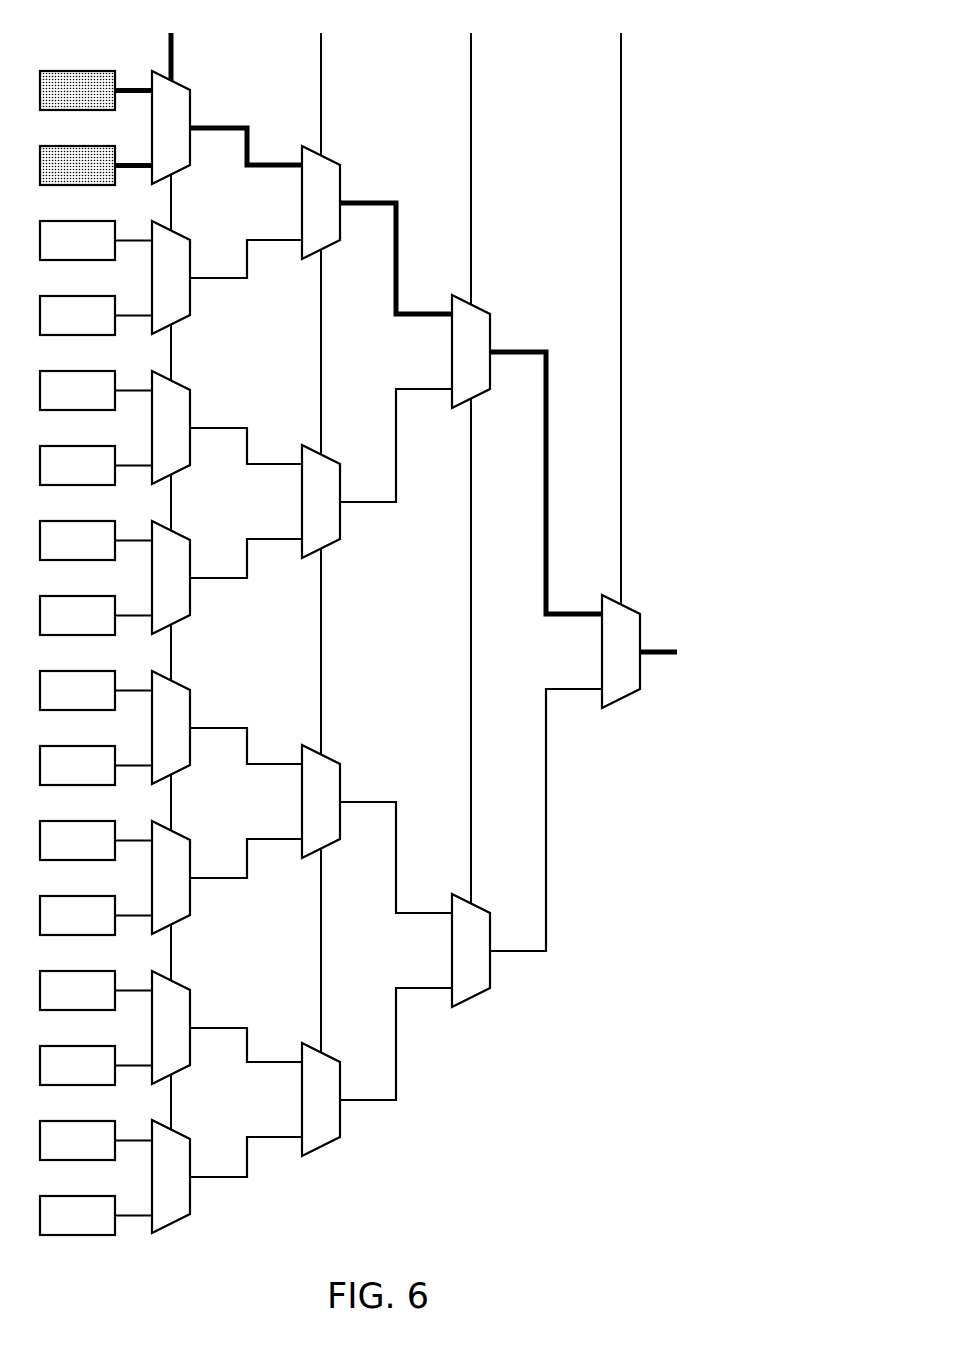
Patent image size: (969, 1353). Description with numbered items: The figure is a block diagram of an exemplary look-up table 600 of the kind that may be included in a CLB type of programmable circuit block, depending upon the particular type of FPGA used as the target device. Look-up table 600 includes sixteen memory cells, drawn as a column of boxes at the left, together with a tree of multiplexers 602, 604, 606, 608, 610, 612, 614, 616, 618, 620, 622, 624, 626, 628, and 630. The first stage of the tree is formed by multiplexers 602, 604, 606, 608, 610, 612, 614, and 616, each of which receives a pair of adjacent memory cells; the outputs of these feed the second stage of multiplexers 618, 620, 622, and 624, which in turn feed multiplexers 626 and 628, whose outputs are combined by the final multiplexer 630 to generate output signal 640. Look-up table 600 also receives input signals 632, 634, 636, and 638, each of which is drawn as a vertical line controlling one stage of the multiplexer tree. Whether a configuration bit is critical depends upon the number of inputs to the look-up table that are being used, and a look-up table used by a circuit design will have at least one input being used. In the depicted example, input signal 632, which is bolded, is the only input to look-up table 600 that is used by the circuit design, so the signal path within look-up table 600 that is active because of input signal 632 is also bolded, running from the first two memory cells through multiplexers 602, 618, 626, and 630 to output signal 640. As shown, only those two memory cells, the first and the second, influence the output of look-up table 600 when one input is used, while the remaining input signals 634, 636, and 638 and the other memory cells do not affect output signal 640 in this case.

The look-up table 600 is at (730, 64).
The multiplexer 602 is at (190, 98).
The multiplexer 604 is at (190, 248).
The multiplexer 606 is at (190, 398).
The multiplexer 608 is at (190, 548).
The multiplexer 610 is at (190, 698).
The multiplexer 612 is at (190, 848).
The multiplexer 614 is at (190, 998).
The multiplexer 616 is at (190, 1147).
The multiplexer 618 is at (340, 173).
The multiplexer 620 is at (340, 528).
The multiplexer 622 is at (340, 772).
The multiplexer 624 is at (340, 1127).
The multiplexer 626 is at (490, 322).
The multiplexer 628 is at (490, 977).
The multiplexer 630 is at (640, 622).
The input signal 632 is at (171, 567).
The input signal 634 is at (321, 528).
The input signal 636 is at (471, 454).
The input signal 638 is at (621, 304).
The output signal 640 is at (682, 653).